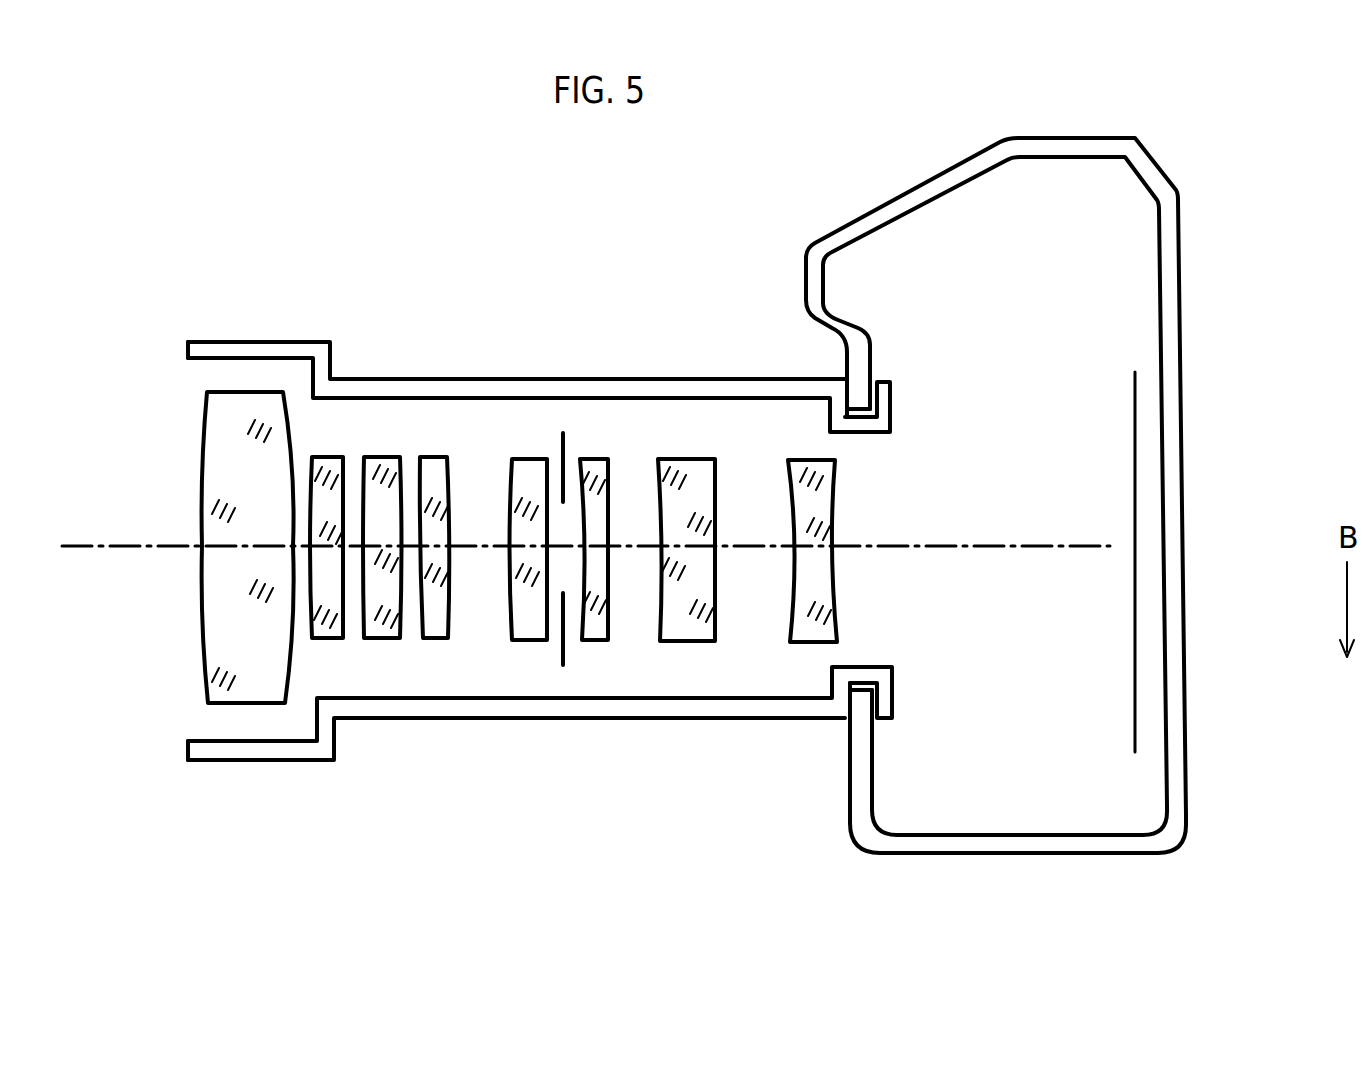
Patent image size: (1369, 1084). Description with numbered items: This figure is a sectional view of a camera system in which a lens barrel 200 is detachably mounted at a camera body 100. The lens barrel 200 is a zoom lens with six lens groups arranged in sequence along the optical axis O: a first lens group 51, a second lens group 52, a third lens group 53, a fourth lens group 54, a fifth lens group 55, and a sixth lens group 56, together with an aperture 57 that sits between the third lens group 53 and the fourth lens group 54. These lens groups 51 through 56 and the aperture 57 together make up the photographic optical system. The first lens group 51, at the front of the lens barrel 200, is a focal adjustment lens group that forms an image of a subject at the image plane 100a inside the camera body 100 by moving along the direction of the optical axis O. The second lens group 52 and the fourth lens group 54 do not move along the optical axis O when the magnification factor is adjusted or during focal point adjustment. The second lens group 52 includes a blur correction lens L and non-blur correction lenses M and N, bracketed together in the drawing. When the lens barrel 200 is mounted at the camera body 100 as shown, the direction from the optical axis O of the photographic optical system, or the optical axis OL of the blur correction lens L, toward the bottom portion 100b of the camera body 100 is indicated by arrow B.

The optical axis O is at (122, 546).
The lens barrel 200 is at (293, 347).
The first lens group 51 is at (250, 690).
The second lens group 52 is at (325, 640).
The third lens group 53 is at (532, 630).
The fourth lens group 54 is at (598, 635).
The fifth lens group 55 is at (683, 630).
The sixth lens group 56 is at (797, 642).
The aperture 57 is at (566, 652).
The camera body 100 is at (1150, 178).
The image plane 100a is at (1135, 425).
The bottom portion 100b is at (1040, 853).